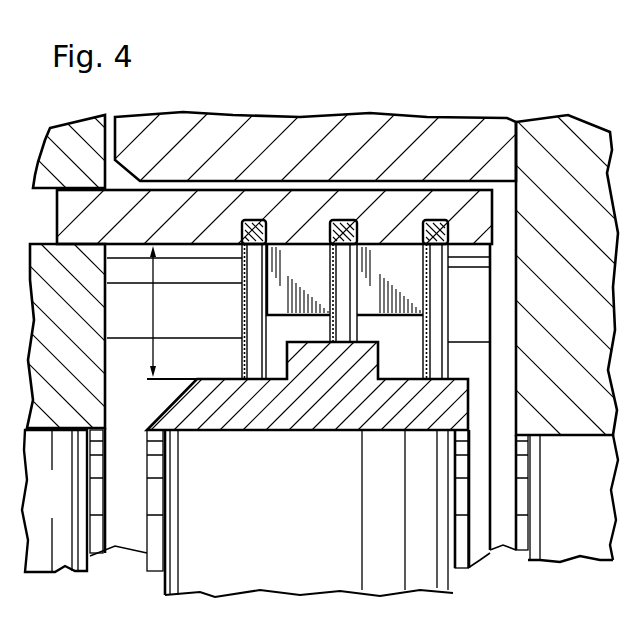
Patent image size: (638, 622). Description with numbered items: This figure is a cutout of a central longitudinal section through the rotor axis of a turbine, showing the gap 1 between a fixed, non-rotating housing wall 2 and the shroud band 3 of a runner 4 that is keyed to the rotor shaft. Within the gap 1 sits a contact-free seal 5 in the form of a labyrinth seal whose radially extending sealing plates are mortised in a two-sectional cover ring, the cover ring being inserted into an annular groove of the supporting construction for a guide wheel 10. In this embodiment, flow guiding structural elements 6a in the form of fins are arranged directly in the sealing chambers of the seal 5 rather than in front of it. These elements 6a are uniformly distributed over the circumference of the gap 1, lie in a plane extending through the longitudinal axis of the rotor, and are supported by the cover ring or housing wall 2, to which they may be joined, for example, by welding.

The gap 1 is at (155, 313).
The housing wall 2 is at (463, 252).
The shroud band 3 is at (342, 377).
The runner 4 is at (340, 514).
The contact-free seal 5 is at (242, 263).
The flow guiding structural elements 6a is at (277, 301).
The guide wheel 10 is at (68, 512).